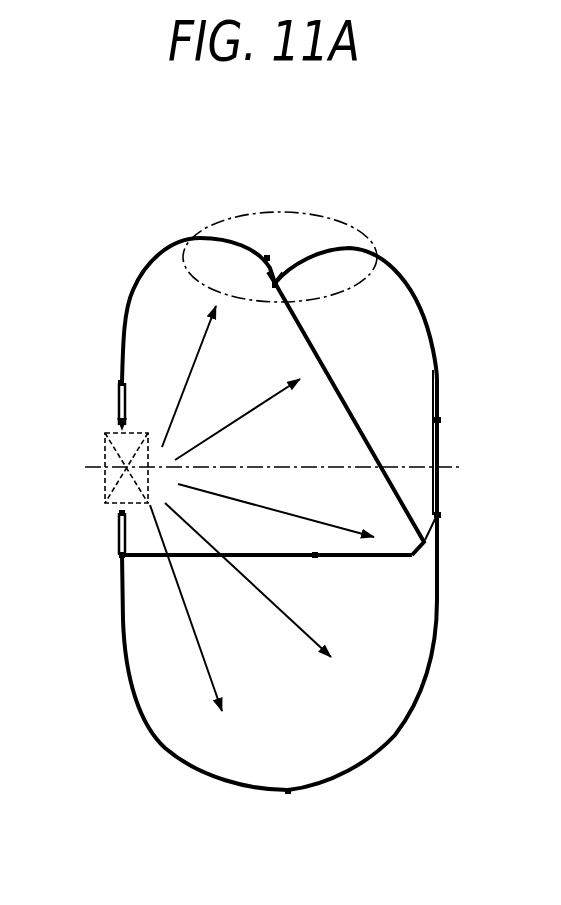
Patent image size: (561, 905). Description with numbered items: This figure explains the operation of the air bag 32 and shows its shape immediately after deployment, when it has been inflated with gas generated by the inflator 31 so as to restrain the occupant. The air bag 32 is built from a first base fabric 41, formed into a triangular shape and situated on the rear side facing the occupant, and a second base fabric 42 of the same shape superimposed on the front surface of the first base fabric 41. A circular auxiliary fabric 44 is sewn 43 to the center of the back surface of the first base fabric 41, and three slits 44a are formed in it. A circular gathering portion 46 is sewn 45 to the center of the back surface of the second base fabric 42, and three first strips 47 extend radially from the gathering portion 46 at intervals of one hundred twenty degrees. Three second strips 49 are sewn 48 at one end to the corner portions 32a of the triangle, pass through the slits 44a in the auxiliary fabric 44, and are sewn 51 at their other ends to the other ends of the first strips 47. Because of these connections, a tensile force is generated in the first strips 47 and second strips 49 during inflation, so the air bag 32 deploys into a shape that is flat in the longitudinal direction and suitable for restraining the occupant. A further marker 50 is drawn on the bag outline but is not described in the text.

The inflator 31 is at (107, 480).
The air bag 32 is at (441, 256).
The corner portion 32a is at (225, 217).
The first base fabric 41 is at (420, 693).
The second base fabric 42 is at (128, 682).
The sewing 43 is at (438, 420).
The auxiliary fabric 44 is at (428, 402).
The slit 44a is at (438, 556).
The sewing 45 is at (121, 383).
The gathering portion 46 is at (126, 424).
The first strip 47 is at (197, 557).
The sewing 48 is at (274, 290).
The second strip 49 is at (352, 416).
The joint 50 is at (266, 257).
The sewing 51 is at (315, 557).